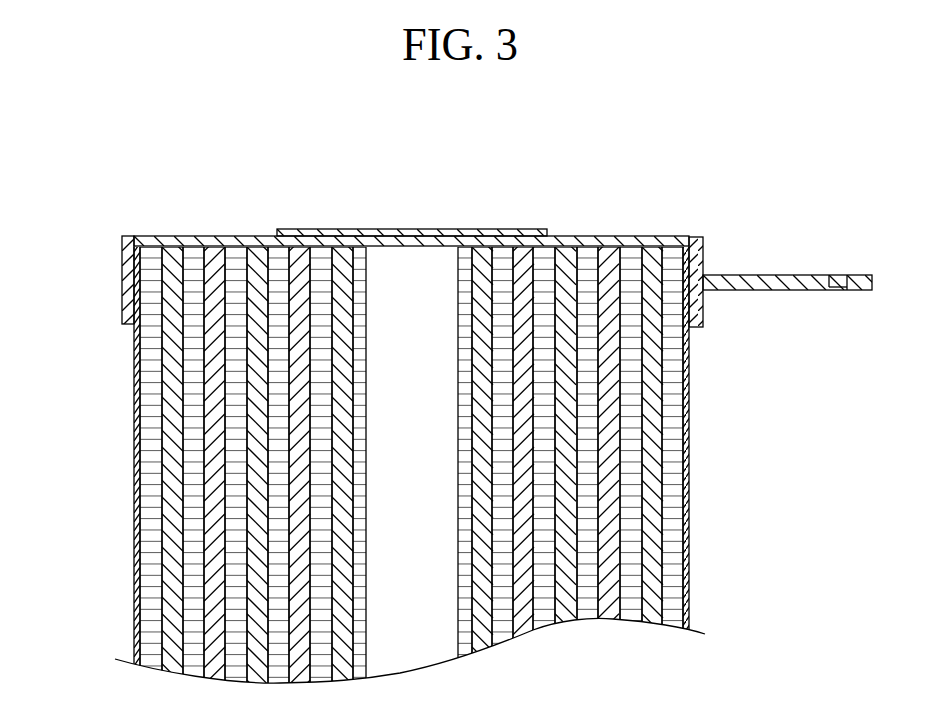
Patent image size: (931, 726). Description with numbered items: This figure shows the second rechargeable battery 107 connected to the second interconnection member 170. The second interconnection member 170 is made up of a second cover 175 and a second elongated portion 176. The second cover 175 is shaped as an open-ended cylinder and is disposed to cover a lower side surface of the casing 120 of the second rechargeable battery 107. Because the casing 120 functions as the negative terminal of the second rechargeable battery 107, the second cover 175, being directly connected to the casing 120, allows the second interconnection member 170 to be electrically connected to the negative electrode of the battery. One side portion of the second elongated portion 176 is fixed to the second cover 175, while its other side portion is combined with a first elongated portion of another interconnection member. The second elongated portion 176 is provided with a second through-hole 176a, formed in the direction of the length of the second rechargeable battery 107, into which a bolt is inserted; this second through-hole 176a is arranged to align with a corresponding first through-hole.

The second rechargeable battery 107 is at (120, 449).
The casing 120 is at (688, 468).
The second interconnection member 170 is at (109, 252).
The second cover 175 is at (697, 237).
The second elongated portion 176 is at (780, 275).
The second through-hole 176a is at (835, 290).